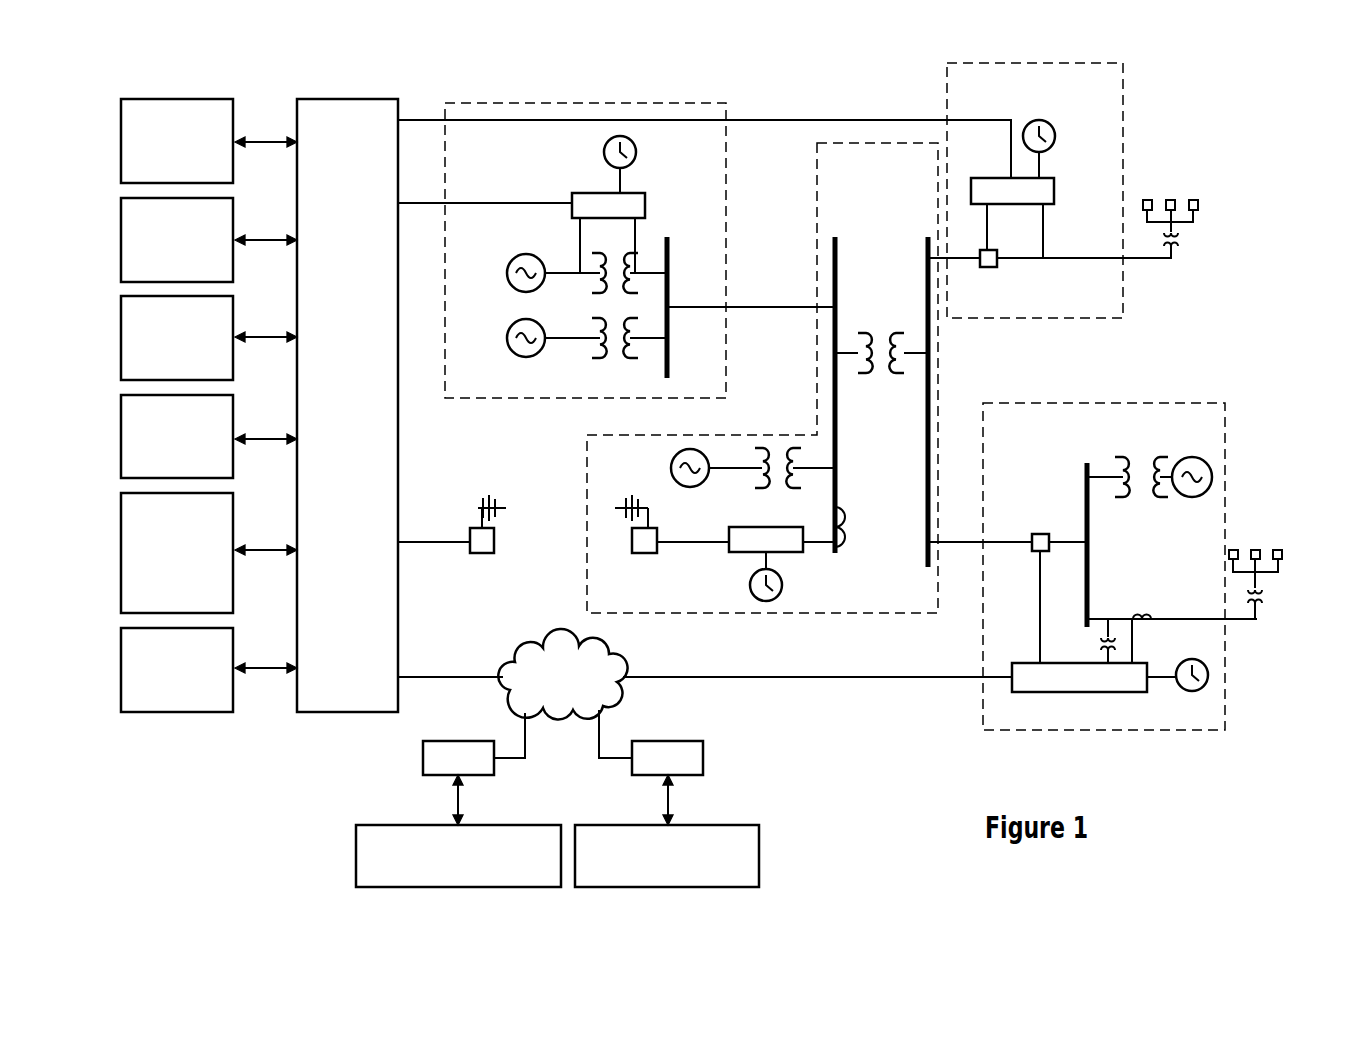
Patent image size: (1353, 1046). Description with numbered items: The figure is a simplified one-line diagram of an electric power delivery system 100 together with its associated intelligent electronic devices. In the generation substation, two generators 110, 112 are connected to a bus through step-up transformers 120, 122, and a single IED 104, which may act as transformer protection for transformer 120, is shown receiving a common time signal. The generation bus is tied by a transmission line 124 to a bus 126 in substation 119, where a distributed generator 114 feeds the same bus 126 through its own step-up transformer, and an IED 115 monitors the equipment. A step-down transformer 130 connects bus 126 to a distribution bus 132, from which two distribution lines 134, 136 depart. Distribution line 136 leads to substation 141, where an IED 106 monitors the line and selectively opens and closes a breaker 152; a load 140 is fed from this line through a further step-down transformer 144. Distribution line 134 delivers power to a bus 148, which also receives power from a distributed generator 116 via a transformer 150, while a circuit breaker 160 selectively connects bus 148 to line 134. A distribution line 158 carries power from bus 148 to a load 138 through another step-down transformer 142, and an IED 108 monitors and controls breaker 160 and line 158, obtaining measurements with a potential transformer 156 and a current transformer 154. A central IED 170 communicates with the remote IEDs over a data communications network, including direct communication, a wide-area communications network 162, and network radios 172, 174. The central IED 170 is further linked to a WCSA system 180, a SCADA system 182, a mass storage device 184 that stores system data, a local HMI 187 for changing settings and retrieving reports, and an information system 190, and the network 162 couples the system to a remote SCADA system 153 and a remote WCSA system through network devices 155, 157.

The electric power delivery system 100 is at (1204, 151).
The IED 104 is at (575, 193).
The IED 106 is at (975, 178).
The IED 108 is at (1140, 692).
The generator 110 is at (507, 273).
The generator 112 is at (507, 338).
The generator 114 is at (671, 468).
The IED 115 is at (778, 527).
The distributed generator 116 is at (1186, 497).
The substation 119 is at (720, 615).
The step-up transformer 120 is at (596, 292).
The step-up transformer 122 is at (610, 360).
The transmission line 124 is at (758, 309).
The bus 126 is at (838, 406).
The step-down transformer 130 is at (870, 333).
The distribution bus 132 is at (926, 536).
The distribution line 134 is at (998, 544).
The distribution line 136 is at (980, 266).
The load 138 is at (1252, 550).
The load 140 is at (1203, 206).
The substation 141 is at (1104, 320).
The step-down transformer 142 is at (1265, 604).
The step-down transformer 144 is at (1182, 243).
The bus 148 is at (1085, 465).
The transformer 150 is at (1130, 457).
The breaker 152 is at (996, 266).
The remote SCADA system 153 is at (444, 879).
The current transformer 154 is at (1140, 630).
The network device 155 is at (458, 758).
The potential transformer 156 is at (1098, 645).
The network device 157 is at (667, 758).
The distribution line 158 is at (1160, 617).
The circuit breaker 160 is at (1032, 534).
The wide-area communications network 162 is at (547, 690).
The central IED 170 is at (332, 459).
The network radio 172 is at (483, 554).
The network radio 174 is at (645, 554).
The WCSA system 180 is at (162, 179).
The SCADA system 182 is at (162, 278).
The mass storage device 184 is at (162, 377).
The local HMI 187 is at (162, 461).
The information system 190 is at (162, 707).